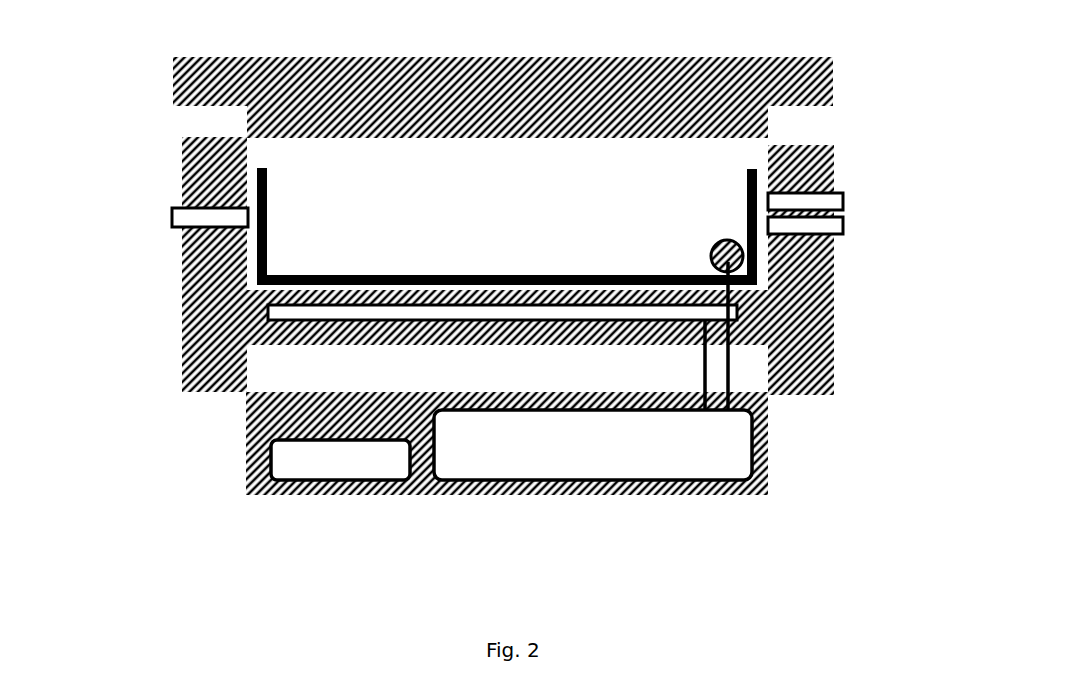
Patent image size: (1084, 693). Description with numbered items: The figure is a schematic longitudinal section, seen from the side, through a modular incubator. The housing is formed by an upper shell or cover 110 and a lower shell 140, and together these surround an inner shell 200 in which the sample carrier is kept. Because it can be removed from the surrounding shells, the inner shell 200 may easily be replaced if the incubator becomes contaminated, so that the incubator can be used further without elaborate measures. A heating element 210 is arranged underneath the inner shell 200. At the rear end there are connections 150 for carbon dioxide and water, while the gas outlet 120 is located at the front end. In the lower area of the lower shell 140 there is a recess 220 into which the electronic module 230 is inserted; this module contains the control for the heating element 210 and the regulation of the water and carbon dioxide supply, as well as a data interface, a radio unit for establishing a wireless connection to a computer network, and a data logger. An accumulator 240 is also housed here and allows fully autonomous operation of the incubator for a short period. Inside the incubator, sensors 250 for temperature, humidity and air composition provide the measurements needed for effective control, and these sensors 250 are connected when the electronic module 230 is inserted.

The cover 110 is at (450, 53).
The gas outlet 120 is at (157, 218).
The lower shell 140 is at (180, 270).
The connections 150 is at (868, 230).
The inner shell 200 is at (260, 165).
The heating element 210 is at (288, 313).
The recess 220 is at (748, 375).
The electronic module 230 is at (460, 495).
The accumulator 240 is at (363, 470).
The sensors 250 is at (723, 240).